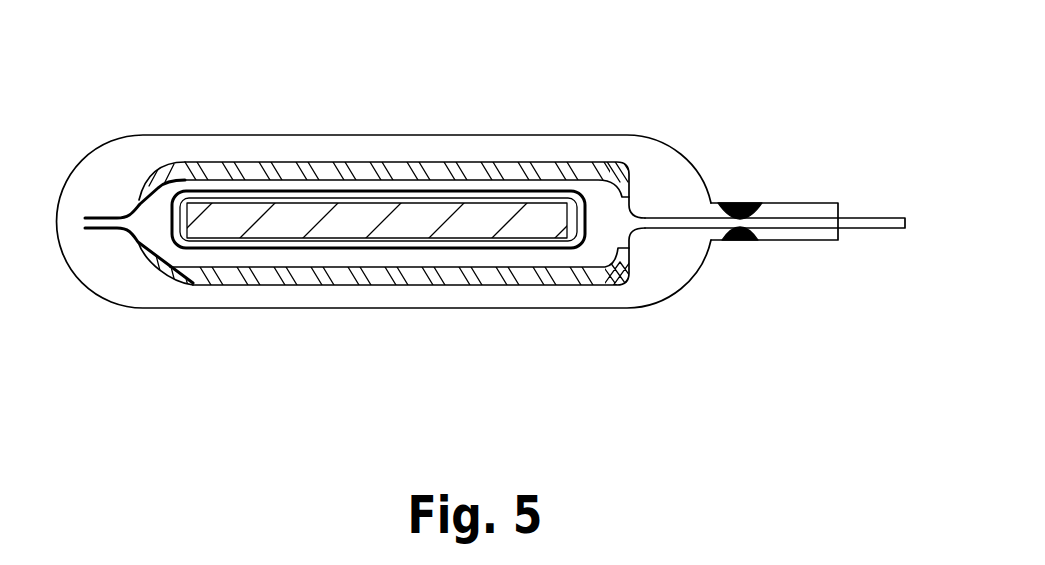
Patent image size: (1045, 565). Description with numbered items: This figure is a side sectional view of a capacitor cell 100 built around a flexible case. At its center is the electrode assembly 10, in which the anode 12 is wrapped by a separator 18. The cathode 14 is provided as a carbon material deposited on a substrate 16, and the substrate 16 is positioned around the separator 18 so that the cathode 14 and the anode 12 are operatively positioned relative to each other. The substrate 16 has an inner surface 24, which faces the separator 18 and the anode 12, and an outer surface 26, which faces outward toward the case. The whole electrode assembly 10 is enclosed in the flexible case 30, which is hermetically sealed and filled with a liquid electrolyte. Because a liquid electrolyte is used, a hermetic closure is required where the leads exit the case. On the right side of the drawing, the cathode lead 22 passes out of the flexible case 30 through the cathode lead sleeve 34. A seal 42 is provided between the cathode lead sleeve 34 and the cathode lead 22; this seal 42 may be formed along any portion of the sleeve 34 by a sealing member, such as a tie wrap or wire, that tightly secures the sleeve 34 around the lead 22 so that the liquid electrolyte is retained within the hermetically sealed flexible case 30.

The temperature sensor assembly 100 is at (351, 67).
The electrode assembly 10 is at (135, 252).
The anode 12 is at (203, 240).
The cathode 14 is at (358, 260).
The substrate 16 is at (463, 276).
The separator 18 is at (293, 250).
The cathode lead 22 is at (870, 218).
The inner surface 24 is at (625, 266).
The outer surface 26 is at (562, 287).
The flexible case 30 is at (602, 134).
The cathode lead sleeve 34 is at (807, 203).
The seal 42 is at (731, 203).